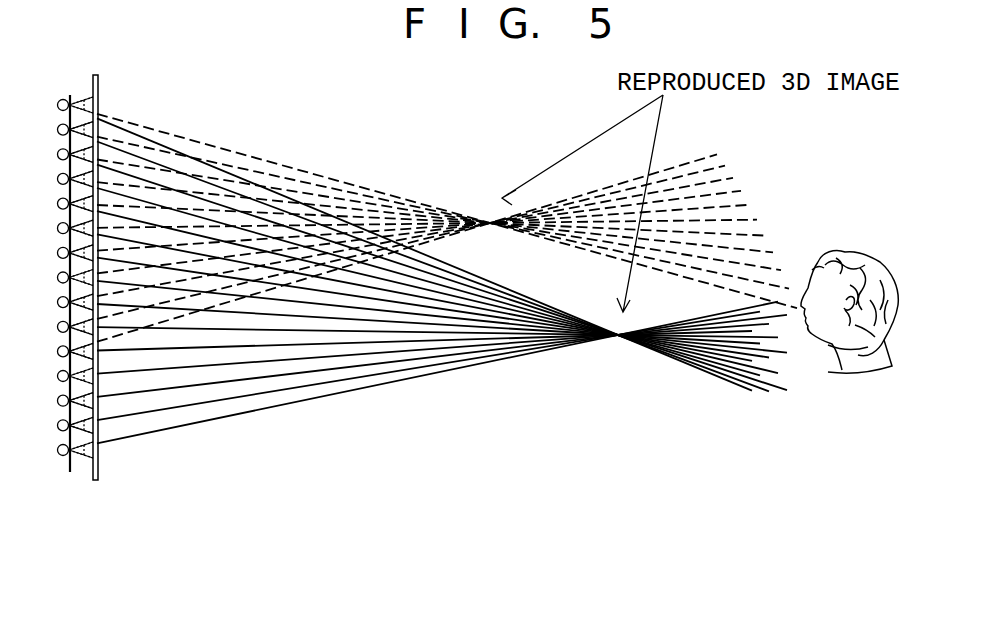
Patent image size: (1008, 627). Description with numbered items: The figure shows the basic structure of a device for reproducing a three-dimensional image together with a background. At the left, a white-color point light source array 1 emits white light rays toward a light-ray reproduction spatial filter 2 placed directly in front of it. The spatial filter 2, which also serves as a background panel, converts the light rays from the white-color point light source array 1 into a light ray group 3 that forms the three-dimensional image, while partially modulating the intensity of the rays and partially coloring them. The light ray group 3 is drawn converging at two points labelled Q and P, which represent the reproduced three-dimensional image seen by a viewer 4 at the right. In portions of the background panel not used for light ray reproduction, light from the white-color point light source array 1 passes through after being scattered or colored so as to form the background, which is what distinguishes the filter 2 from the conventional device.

The white-color point light source array 1 is at (70, 460).
The light-ray reproduction spatial filter 2 is at (101, 77).
The light ray group 3 is at (456, 396).
The observer 4 is at (868, 373).